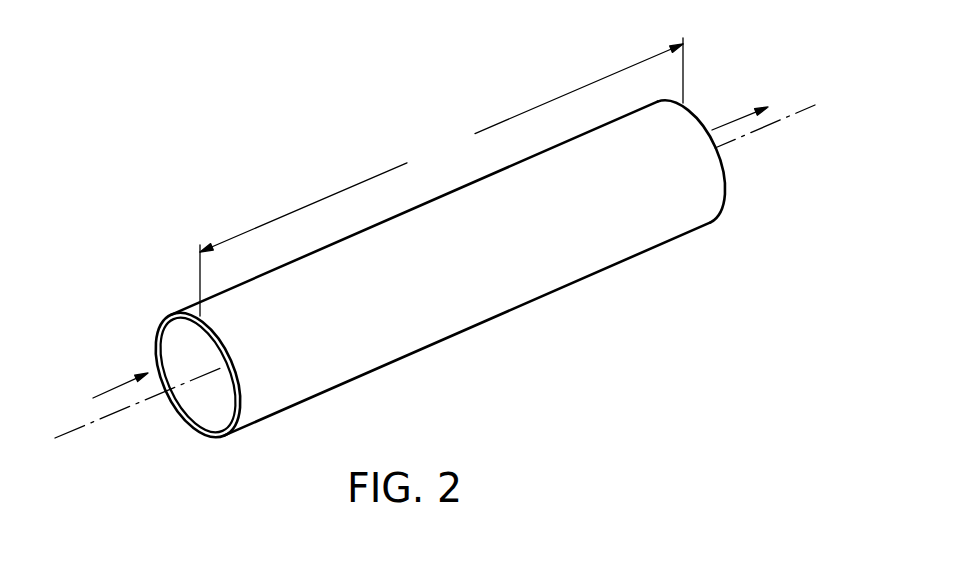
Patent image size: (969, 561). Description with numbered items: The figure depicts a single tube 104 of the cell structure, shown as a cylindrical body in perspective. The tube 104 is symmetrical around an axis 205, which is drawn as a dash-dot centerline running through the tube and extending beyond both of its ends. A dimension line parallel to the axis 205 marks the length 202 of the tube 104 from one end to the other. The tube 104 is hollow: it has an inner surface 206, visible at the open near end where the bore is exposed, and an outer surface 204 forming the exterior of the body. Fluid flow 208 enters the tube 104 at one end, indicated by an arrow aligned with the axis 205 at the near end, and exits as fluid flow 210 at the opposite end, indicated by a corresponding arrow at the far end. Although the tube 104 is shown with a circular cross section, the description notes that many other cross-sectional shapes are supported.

The tube 104 is at (428, 283).
The length 202 is at (441, 177).
The outer surface 204 is at (558, 273).
The axis 205 is at (812, 107).
The inner surface 206 is at (210, 417).
The fluid flow 208 is at (113, 390).
The fluid flow 210 is at (738, 118).